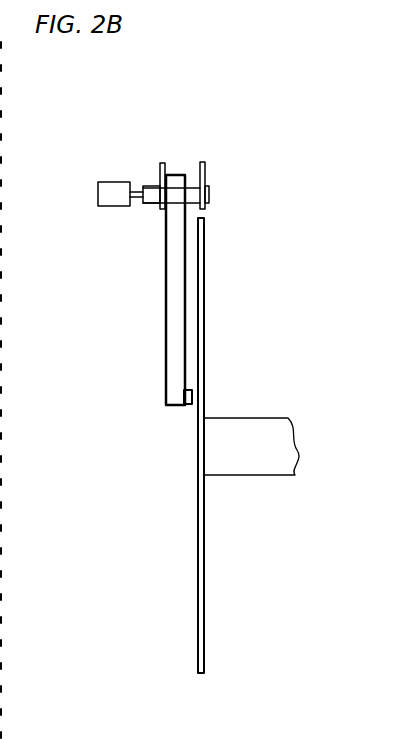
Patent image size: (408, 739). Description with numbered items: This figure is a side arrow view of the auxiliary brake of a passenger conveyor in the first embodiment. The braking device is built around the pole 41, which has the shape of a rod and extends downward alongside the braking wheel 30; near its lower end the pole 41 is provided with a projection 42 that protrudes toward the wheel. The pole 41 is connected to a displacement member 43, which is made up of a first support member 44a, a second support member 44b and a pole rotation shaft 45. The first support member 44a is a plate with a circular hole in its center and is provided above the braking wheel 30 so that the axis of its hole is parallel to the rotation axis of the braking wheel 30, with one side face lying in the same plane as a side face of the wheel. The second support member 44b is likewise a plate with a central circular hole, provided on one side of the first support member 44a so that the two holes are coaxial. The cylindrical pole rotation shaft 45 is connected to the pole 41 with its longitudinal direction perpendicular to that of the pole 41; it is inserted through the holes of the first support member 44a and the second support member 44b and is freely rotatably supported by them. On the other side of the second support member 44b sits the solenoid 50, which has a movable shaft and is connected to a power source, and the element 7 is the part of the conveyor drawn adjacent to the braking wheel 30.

The workpiece 7 is at (257, 440).
The braking wheel 30 is at (205, 553).
The pole 41 is at (167, 376).
The projection 42 is at (188, 408).
The displacement member 43 is at (132, 82).
The first support member 44a is at (203, 163).
The second support member 44b is at (162, 165).
The pole rotation shaft 45 is at (209, 196).
The solenoid 50 is at (99, 193).